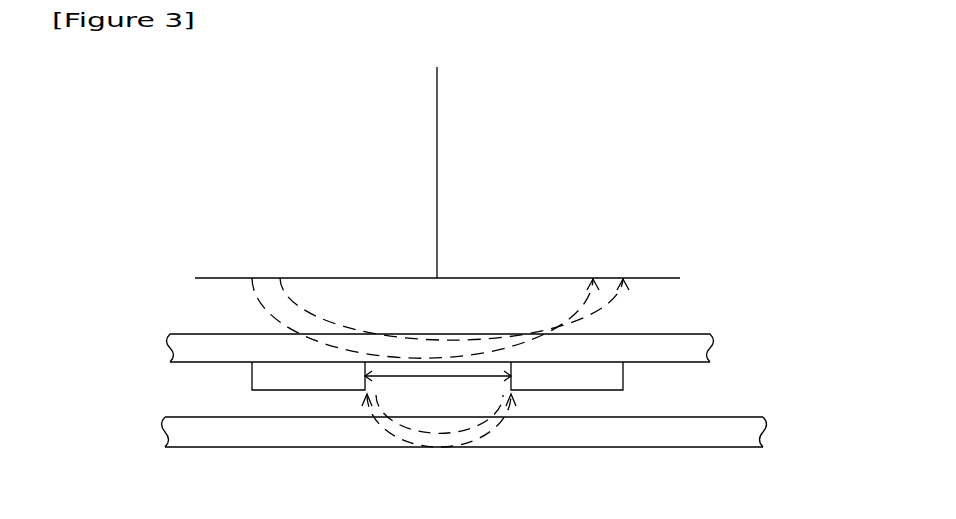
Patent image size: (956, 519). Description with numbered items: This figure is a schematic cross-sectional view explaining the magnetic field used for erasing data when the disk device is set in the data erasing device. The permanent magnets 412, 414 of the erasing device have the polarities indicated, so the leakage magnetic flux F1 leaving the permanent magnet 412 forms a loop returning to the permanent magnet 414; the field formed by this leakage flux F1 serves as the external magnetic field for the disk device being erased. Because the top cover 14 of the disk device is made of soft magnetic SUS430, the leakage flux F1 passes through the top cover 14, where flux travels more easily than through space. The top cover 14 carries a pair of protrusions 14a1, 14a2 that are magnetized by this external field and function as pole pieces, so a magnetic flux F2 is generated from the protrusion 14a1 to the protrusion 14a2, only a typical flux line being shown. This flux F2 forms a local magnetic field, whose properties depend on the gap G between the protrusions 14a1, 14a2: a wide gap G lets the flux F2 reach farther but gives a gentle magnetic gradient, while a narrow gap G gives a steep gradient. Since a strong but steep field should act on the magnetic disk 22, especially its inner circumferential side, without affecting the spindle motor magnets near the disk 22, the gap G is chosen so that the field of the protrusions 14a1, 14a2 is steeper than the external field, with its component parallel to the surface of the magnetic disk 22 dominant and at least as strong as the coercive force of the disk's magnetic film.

The permanent magnet 412 is at (310, 142).
The permanent magnet 414 is at (565, 145).
The top cover 14 is at (712, 340).
The protrusion 14a1 is at (252, 372).
The protrusion 14a2 is at (623, 378).
The magnetic disk 22 is at (765, 428).
The magnetic flux F1 is at (617, 302).
The magnetic flux F2 is at (492, 427).
The gap G is at (438, 388).